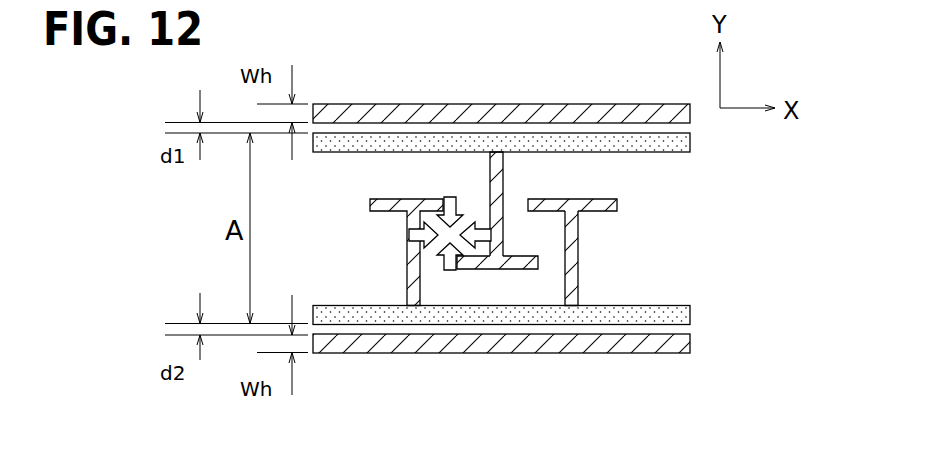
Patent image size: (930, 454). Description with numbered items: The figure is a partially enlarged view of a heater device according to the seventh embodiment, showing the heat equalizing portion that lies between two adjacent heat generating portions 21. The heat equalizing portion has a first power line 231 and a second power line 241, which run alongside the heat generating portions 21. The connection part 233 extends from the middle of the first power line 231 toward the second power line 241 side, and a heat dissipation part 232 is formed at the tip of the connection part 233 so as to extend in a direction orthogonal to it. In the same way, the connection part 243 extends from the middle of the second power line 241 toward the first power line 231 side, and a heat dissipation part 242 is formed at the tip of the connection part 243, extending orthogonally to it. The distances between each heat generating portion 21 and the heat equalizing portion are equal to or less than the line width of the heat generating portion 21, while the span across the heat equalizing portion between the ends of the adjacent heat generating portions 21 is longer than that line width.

The heat generating portion 21 is at (478, 103).
The second power line 241 is at (678, 152).
The first power line 231 is at (667, 306).
The connection part 243 is at (488, 175).
The heat dissipation part 242 is at (487, 270).
The heat dissipation part 232 is at (560, 200).
The connection part 233 is at (578, 273).